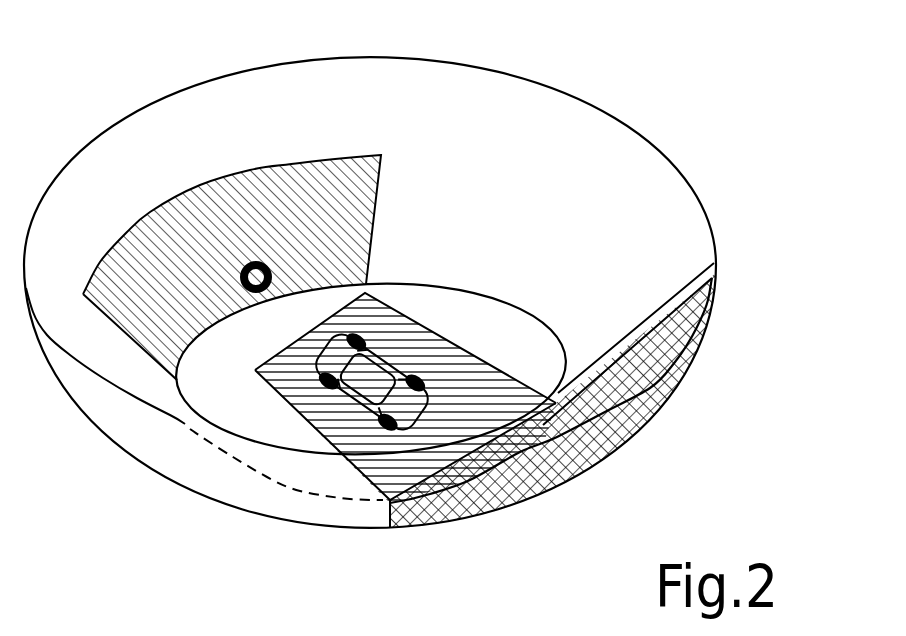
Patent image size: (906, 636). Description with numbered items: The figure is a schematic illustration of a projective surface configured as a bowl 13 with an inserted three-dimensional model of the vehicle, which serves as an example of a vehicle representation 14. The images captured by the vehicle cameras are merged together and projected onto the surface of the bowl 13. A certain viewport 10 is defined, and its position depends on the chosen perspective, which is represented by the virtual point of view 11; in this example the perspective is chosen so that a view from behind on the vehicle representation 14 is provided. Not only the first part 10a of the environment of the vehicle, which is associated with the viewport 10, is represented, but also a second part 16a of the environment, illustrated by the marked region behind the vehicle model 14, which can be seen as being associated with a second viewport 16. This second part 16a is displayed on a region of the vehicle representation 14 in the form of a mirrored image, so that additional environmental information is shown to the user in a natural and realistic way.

The viewport 10 is at (663, 310).
The first part of the environment 10a is at (663, 392).
The virtual point of view 11 is at (255, 262).
The bowl 13 is at (468, 167).
The vehicle representation 14 is at (381, 375).
The second viewport 16 is at (288, 157).
The second part of the environment 16a is at (137, 275).